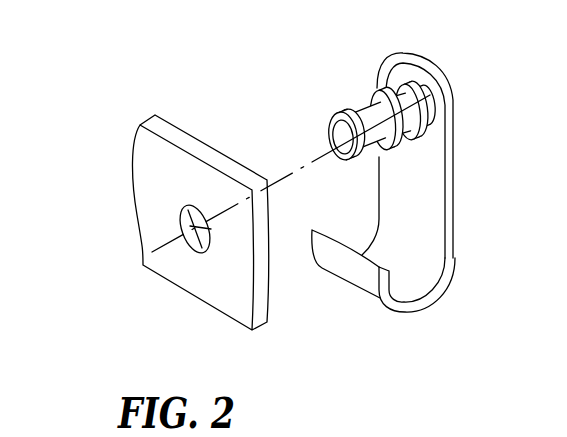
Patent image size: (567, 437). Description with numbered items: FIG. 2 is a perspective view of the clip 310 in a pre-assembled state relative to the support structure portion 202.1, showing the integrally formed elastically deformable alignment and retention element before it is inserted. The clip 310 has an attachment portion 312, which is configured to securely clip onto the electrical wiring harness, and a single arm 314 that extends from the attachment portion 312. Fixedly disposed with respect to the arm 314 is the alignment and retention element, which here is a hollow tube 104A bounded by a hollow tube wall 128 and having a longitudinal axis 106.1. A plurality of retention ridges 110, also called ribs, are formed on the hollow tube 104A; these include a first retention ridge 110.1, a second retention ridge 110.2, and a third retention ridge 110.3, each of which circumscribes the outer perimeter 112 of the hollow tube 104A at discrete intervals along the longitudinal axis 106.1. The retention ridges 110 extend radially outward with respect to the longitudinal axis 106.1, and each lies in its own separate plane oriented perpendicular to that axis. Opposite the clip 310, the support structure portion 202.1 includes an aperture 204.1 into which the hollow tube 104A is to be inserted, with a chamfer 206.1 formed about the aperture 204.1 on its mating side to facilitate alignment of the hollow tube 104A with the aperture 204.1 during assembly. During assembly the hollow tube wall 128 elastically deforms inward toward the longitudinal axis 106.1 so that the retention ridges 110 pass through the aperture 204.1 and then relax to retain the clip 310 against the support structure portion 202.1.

The support structure portion 202.1 is at (159, 185).
The aperture 204.1 is at (180, 207).
The chamfer 206.1 is at (437, 333).
The retention ridges 110 is at (370, 129).
The first retention ridge 110.1 is at (368, 149).
The retention ridge 110.2 is at (386, 150).
The retention ridge 110.3 is at (411, 142).
The outer perimeter 112 is at (369, 106).
The hollow tube 104A is at (321, 114).
The hollow tube wall 128 is at (331, 138).
The longitudinal axis 106.1 is at (320, 155).
The clip 310 is at (456, 184).
The attachment portion 312 is at (410, 314).
The arm 314 is at (454, 127).